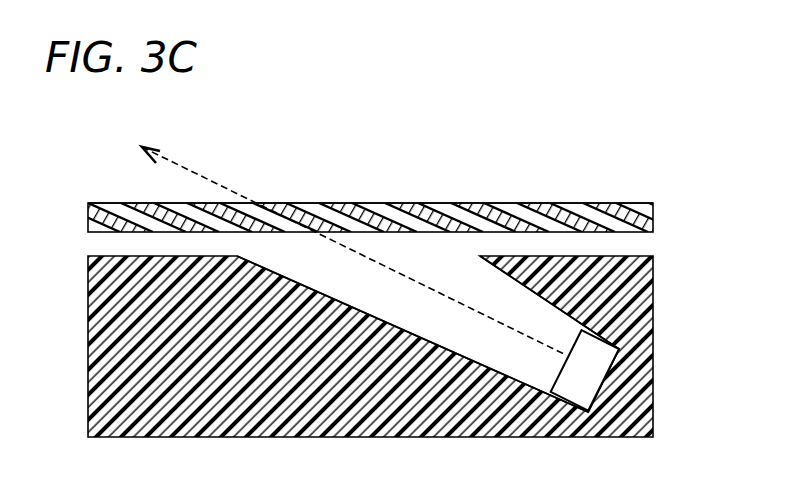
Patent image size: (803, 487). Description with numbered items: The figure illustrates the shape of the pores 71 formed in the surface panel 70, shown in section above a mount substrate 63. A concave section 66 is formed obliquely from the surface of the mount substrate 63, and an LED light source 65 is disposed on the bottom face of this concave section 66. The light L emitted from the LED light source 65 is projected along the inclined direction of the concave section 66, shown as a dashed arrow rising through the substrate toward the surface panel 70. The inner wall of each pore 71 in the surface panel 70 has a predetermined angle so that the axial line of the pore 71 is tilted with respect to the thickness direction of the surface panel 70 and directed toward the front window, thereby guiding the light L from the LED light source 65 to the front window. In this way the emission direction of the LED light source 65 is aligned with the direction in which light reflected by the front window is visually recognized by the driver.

The mount substrate 63 is at (118, 306).
The LED light source 65 is at (608, 372).
The concave section 66 is at (392, 324).
The surface panel 70 is at (475, 203).
The pore 71 is at (351, 203).
The light L is at (180, 165).